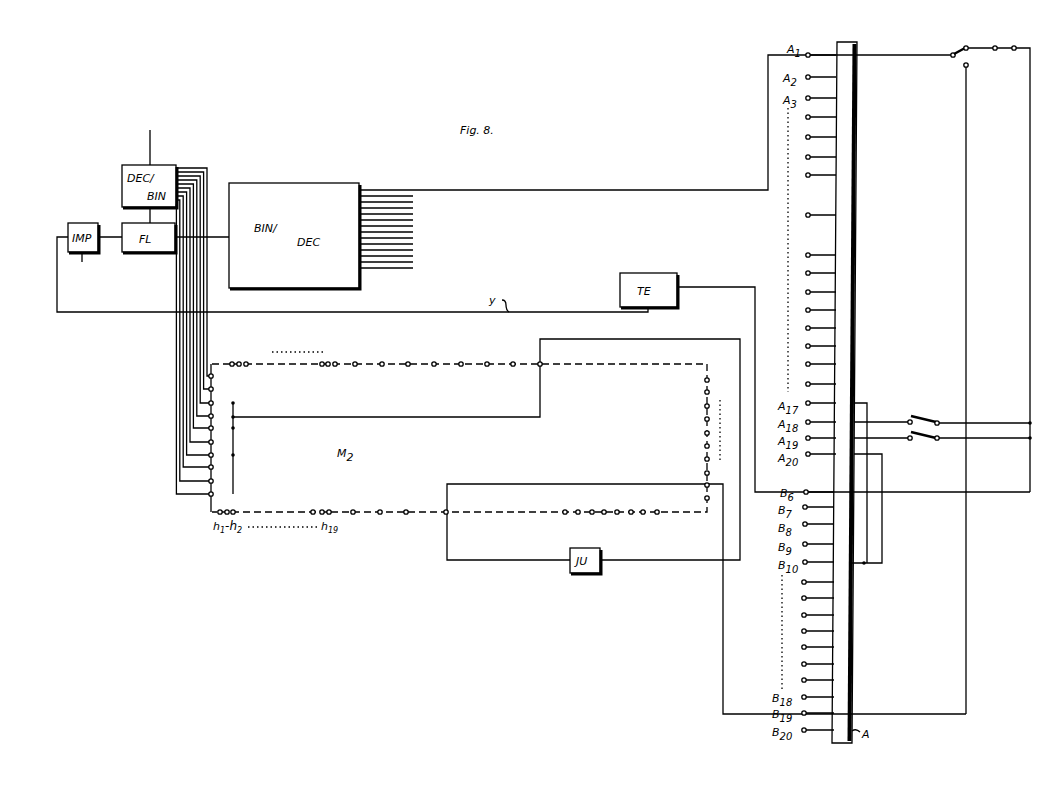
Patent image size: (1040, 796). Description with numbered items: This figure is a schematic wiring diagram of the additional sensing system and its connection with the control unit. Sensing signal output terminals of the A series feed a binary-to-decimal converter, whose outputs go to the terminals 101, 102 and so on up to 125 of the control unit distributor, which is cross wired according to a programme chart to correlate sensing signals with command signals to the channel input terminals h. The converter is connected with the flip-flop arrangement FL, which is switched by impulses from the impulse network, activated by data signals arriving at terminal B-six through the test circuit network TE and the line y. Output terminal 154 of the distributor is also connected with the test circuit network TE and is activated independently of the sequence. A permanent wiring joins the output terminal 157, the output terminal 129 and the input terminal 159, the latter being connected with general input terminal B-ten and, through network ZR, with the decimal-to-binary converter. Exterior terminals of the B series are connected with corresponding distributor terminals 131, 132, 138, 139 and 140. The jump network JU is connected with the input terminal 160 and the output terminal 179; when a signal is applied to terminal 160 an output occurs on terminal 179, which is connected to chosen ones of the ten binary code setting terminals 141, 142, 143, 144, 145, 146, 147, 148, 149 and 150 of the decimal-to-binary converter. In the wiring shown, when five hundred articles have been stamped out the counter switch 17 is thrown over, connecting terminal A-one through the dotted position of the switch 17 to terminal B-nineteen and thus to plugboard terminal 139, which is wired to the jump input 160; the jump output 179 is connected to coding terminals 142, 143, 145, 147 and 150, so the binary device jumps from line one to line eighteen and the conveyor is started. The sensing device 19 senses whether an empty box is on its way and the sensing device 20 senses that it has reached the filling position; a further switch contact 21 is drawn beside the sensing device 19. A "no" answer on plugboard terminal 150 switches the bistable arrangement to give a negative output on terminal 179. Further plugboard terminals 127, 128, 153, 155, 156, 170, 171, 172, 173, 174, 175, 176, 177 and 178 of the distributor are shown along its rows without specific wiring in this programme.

The counter switch 17 is at (889, 52).
The sensing device 19 is at (925, 414).
The sensing device 20 is at (999, 264).
The switch contact 21 is at (923, 440).
The distributor terminal 101 is at (238, 356).
The distributor terminal 102 is at (258, 356).
The distributor terminal 125 is at (334, 356).
The matrix contact 127 is at (355, 366).
The matrix contact 128 is at (353, 514).
The output terminal 129 is at (382, 366).
The distributor terminal 131 is at (719, 380).
The distributor terminal 132 is at (719, 393).
The distributor terminal 138 is at (719, 468).
The plugboard terminal 139 is at (719, 480).
The distributor terminal 140 is at (719, 499).
The binary code setting input terminal 141 is at (214, 376).
The binary code setting input terminal 142 is at (214, 389).
The binary code setting input terminal 143 is at (214, 403).
The binary code setting input terminal 144 is at (214, 416).
The binary code setting input terminal 145 is at (214, 428).
The binary code setting input terminal 146 is at (214, 442).
The binary code setting input terminal 147 is at (214, 455).
The binary code setting input terminal 148 is at (214, 467).
The binary code setting input terminal 149 is at (214, 481).
The binary code setting input terminal 150 is at (214, 494).
The matrix contact 153 is at (408, 366).
The output terminal 154 is at (434, 366).
The matrix contact 155 is at (380, 514).
The matrix contact 156 is at (461, 366).
The output terminal 157 is at (487, 366).
The input terminal 159 is at (406, 514).
The input terminal 160 is at (447, 514).
The matrix contact 170 is at (565, 514).
The matrix contact 171 is at (578, 522).
The matrix contact 172 is at (590, 522).
The matrix contact 173 is at (602, 522).
The matrix contact 174 is at (614, 522).
The matrix contact 175 is at (627, 522).
The matrix contact 176 is at (643, 514).
The matrix contact 177 is at (670, 522).
The matrix contact 178 is at (513, 366).
The output terminal 179 is at (541, 366).